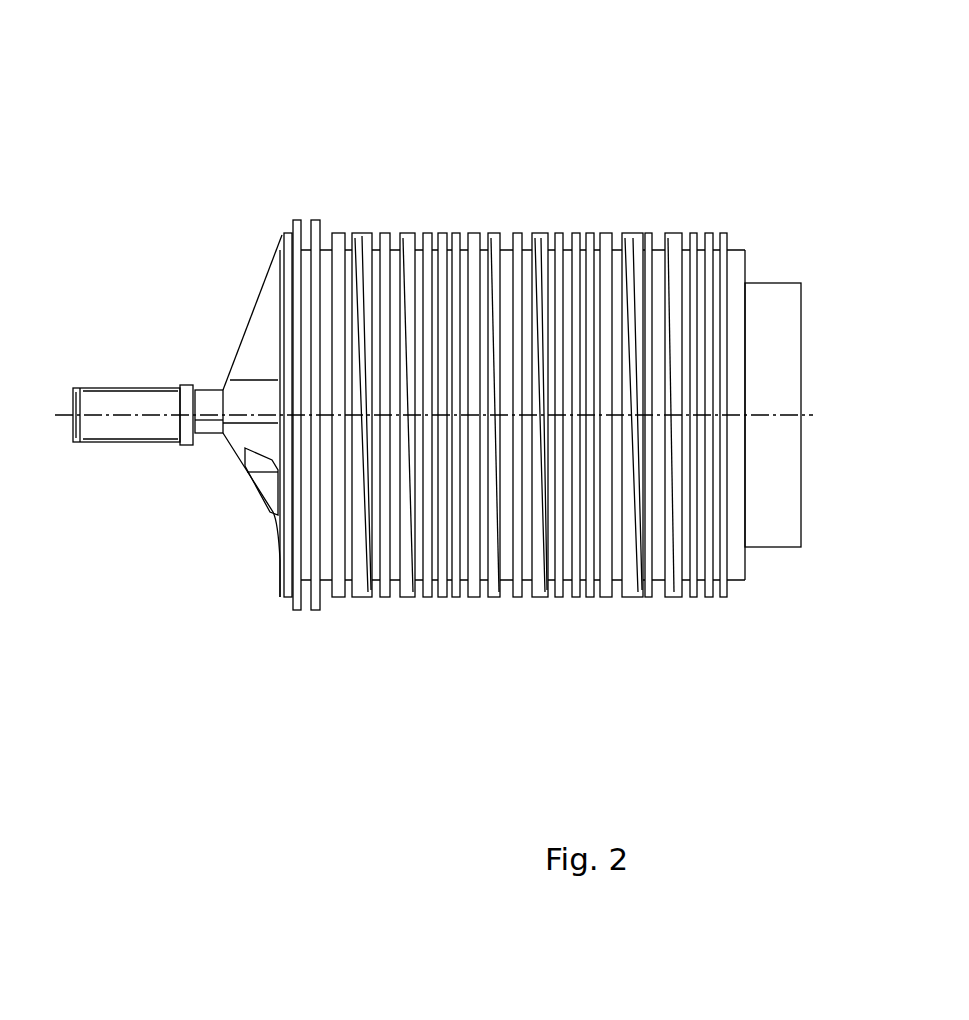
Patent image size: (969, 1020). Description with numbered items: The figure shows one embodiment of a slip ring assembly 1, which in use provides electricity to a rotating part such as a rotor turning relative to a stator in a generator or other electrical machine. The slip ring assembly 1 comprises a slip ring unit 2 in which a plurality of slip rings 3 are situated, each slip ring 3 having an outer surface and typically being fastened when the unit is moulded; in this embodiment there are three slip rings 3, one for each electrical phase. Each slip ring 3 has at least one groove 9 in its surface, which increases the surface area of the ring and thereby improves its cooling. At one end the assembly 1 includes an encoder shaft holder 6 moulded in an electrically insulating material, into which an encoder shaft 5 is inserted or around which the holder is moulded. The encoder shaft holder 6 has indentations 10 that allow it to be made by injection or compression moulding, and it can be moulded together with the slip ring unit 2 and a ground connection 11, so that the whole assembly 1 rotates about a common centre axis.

The slip ring assembly 1 is at (772, 100).
The slip ring unit 2 is at (314, 160).
The slip ring 3 is at (378, 258).
The encoder shaft 5 is at (130, 415).
The encoder shaft holder 6 is at (248, 400).
The groove 9 is at (362, 597).
The indentations 10 is at (262, 332).
The ground connection 11 is at (785, 512).